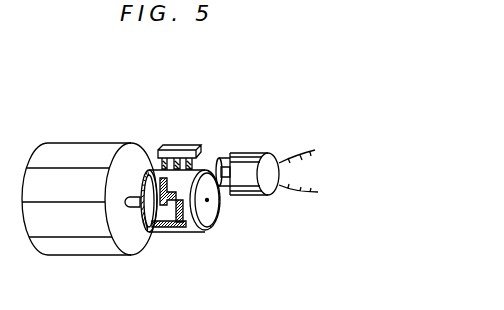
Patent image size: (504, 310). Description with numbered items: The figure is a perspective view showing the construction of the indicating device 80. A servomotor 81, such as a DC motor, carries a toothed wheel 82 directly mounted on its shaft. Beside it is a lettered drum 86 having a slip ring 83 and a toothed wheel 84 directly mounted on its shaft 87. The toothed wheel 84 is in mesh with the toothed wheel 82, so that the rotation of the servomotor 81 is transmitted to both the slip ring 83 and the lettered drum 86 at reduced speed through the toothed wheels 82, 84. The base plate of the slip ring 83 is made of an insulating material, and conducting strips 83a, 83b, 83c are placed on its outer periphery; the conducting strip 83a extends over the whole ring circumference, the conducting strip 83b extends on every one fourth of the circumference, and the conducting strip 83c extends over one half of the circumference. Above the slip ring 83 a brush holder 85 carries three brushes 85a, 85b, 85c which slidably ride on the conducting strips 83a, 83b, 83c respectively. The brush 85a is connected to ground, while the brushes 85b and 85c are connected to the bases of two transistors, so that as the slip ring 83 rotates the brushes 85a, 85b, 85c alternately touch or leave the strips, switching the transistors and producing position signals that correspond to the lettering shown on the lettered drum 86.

The indicating device 80 is at (137, 103).
The servomotor 81 is at (267, 151).
The toothed wheel 82 is at (220, 158).
The slip ring 83 is at (185, 231).
The conducting strip 83a is at (144, 234).
The conducting strip 83b is at (165, 233).
The conducting strip 83c is at (186, 233).
The toothed wheel 84 is at (222, 204).
The brush holder 85 is at (194, 131).
The brush 85a is at (161, 148).
The brush 85b is at (193, 146).
The brush 85c is at (203, 146).
The lettered drum 86 is at (68, 143).
The shaft 87 is at (132, 208).